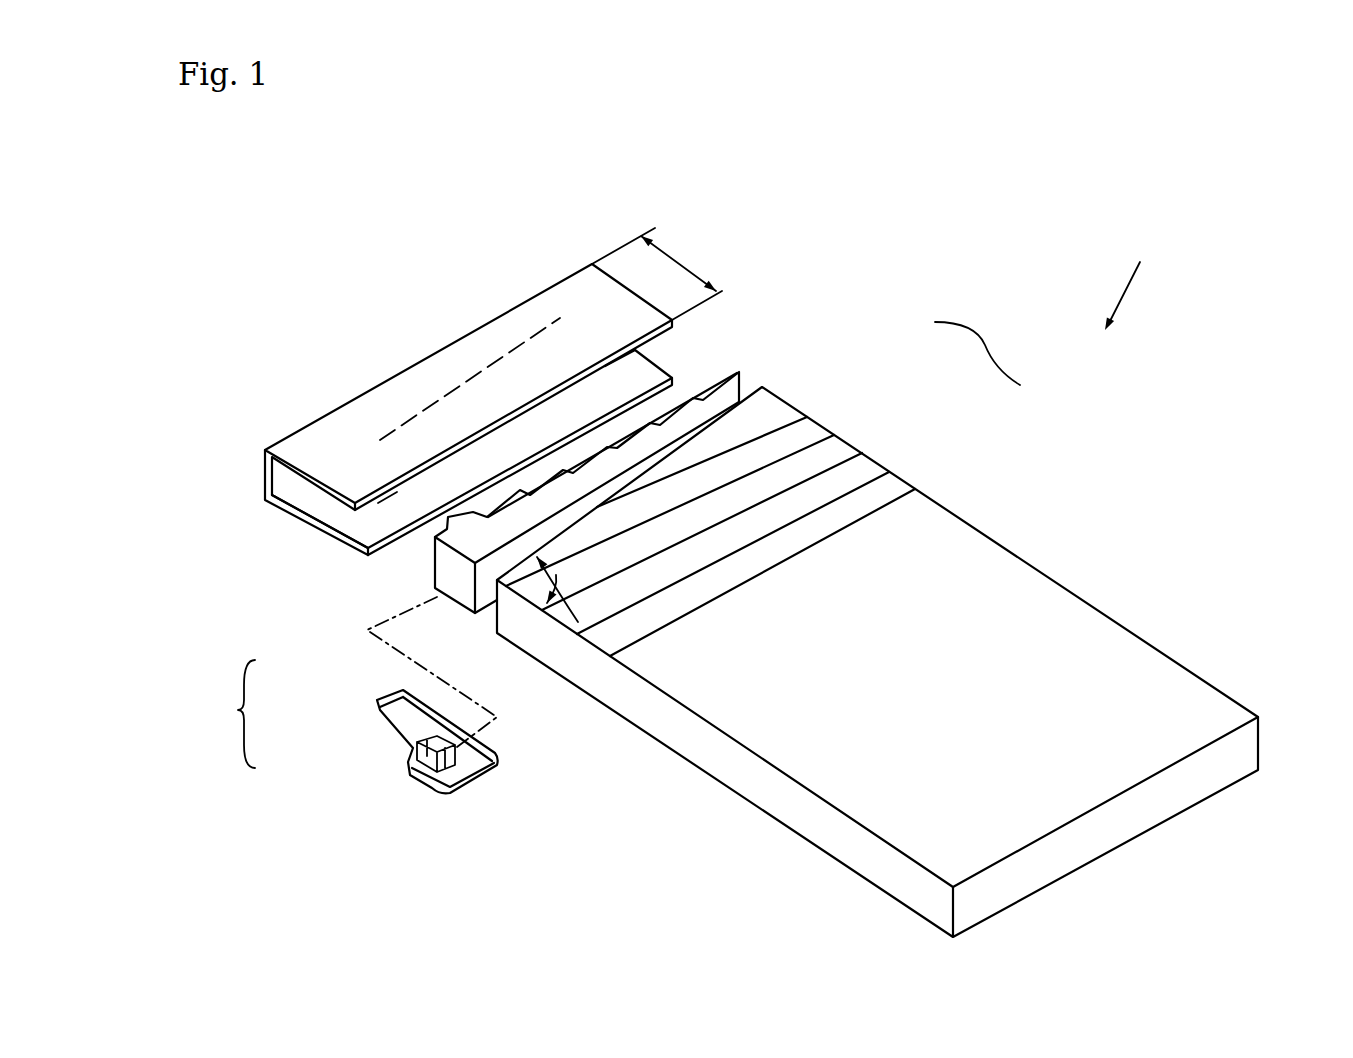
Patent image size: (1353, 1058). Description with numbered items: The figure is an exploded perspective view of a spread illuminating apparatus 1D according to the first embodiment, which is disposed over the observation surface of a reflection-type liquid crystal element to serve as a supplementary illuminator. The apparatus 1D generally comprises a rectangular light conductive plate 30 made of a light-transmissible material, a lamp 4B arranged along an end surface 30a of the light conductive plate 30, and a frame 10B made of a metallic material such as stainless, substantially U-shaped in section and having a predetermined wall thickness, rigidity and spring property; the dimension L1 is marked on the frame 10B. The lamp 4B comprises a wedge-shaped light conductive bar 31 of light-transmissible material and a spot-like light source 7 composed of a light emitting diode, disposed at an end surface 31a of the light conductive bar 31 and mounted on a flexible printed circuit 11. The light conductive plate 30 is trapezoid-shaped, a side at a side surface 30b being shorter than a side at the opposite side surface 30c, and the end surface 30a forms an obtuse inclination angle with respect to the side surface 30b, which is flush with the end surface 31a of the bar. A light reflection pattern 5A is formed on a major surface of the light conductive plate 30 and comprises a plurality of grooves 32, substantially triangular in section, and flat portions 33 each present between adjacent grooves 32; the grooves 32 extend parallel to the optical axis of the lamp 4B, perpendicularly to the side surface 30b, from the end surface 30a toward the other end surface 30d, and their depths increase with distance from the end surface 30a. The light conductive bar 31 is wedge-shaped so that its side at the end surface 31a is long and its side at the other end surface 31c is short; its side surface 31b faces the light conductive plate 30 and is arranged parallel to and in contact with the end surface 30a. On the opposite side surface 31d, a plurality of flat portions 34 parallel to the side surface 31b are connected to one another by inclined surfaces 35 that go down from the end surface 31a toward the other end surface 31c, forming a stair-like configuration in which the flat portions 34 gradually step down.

The spread illuminating apparatus 1D is at (1172, 250).
The frame 10B is at (322, 400).
The flat portions 34 is at (640, 460).
The length L1 is at (657, 269).
The light conductive bar 31 is at (561, 533).
The end surface 31a is at (452, 585).
The side surface 31b is at (597, 486).
The other end surface 31c is at (740, 370).
The side surface 31d is at (450, 540).
The inclined surfaces 35 is at (437, 583).
The light conductive plate 30 is at (898, 620).
The end surface 30a is at (690, 465).
The side surface 30b is at (845, 840).
The side surface 30c is at (1042, 560).
The other end surface 30d is at (1130, 813).
The grooves 32 is at (775, 427).
The flat portions 33 is at (886, 472).
The light reflection pattern 5A is at (990, 344).
The spot-like light source 7 is at (416, 768).
The flexible printed circuit 11 is at (477, 757).
The lamp 4B is at (225, 714).